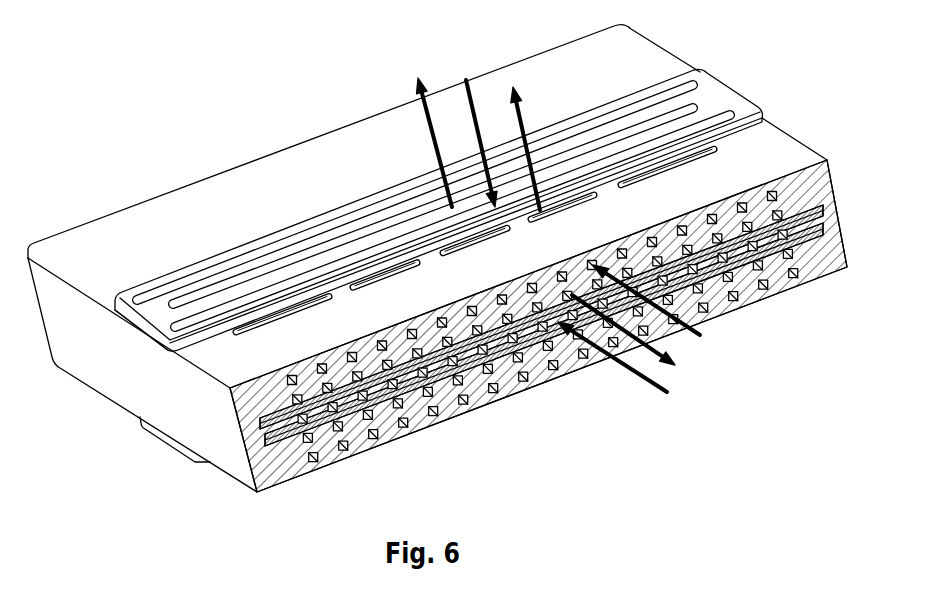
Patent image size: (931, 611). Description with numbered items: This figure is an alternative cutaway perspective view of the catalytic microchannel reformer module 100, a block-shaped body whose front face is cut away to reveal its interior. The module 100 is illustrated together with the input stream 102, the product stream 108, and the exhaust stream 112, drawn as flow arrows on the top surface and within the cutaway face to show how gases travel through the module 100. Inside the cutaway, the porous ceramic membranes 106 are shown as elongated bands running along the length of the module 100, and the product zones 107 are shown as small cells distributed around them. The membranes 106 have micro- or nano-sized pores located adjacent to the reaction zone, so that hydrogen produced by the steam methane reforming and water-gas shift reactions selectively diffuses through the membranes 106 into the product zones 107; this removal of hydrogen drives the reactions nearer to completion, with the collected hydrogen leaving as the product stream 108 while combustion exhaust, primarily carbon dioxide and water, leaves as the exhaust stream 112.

The microchannel reformer module 100 is at (243, 90).
The input stream 102 is at (476, 130).
The porous ceramic membrane 106 is at (468, 351).
The product zone 107 is at (400, 390).
The product stream 108 is at (436, 150).
The exhaust stream 112 is at (522, 133).